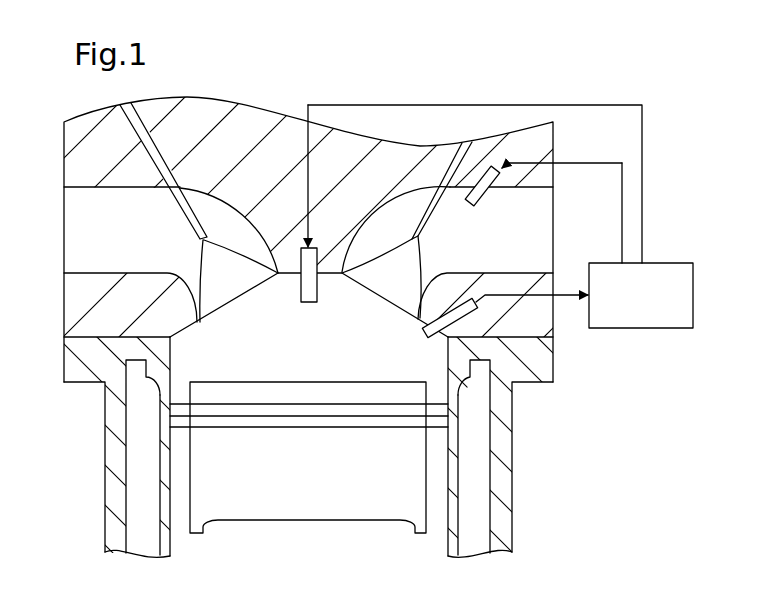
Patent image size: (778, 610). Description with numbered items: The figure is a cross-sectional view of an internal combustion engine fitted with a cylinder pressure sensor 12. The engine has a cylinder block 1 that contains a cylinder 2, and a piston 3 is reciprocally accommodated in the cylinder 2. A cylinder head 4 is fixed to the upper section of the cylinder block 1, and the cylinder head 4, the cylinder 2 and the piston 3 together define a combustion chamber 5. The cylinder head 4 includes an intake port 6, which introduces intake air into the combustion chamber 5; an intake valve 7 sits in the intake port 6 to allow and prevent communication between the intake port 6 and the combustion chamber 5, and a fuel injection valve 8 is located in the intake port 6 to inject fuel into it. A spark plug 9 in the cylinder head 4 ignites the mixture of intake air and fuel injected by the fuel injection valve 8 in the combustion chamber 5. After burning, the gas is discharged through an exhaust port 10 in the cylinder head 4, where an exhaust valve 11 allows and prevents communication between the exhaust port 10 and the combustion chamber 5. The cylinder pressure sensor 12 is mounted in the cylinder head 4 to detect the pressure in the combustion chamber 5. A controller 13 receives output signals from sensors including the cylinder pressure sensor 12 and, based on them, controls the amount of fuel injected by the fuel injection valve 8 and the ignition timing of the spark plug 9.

The cylinder block 1 is at (513, 473).
The cylinder 2 is at (447, 537).
The piston 3 is at (307, 521).
The cylinder head 4 is at (72, 299).
The combustion chamber 5 is at (316, 355).
The intake port 6 is at (475, 273).
The intake valve 7 is at (412, 260).
The fuel injection valve 8 is at (489, 199).
The spark plug 9 is at (318, 295).
The exhaust port 10 is at (137, 273).
The exhaust valve 11 is at (203, 254).
The cylinder pressure sensor 12 is at (423, 335).
The controller 13 is at (660, 263).